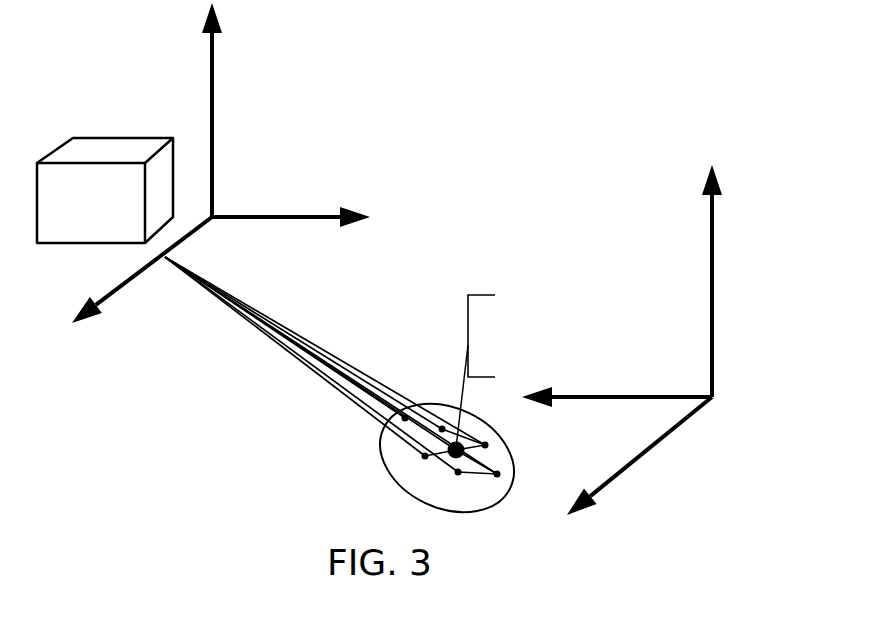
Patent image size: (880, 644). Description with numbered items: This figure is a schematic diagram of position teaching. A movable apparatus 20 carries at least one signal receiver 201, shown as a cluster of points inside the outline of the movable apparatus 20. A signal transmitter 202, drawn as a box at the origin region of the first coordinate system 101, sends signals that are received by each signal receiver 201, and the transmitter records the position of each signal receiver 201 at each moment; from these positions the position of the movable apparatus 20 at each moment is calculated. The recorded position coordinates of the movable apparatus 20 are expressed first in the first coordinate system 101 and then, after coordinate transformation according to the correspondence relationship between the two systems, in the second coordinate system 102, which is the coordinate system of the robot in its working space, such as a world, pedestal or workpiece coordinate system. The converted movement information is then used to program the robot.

The first coordinate system 101 is at (212, 118).
The second coordinate system 102 is at (666, 438).
The signal transmitter 202 is at (72, 214).
The signal receiver 201 is at (497, 474).
The movable apparatus 20 is at (511, 456).